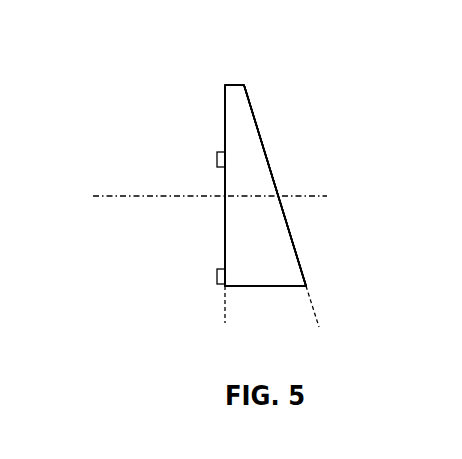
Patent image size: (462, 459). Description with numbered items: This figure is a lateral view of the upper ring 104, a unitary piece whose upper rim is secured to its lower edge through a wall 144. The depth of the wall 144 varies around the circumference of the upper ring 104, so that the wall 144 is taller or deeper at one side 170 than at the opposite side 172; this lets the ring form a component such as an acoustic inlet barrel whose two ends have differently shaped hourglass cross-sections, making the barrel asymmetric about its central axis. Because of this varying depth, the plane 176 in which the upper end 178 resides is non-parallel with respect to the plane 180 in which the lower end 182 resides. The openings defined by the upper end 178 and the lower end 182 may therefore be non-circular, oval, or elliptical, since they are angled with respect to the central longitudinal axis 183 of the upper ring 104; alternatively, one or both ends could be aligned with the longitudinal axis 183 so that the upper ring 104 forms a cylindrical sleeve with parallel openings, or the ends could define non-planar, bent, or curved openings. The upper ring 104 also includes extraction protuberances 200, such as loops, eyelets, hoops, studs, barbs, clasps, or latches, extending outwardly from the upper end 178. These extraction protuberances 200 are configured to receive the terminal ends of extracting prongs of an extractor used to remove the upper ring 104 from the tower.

The upper ring 104 is at (184, 113).
The opposite side 172 is at (232, 84).
The one side 170 is at (266, 287).
The plane 176 is at (223, 305).
The plane 180 is at (313, 304).
The lower end 182 is at (296, 241).
The upper end 178 is at (227, 233).
The wall 144 is at (253, 205).
The central longitudinal axis 183 is at (110, 196).
The extraction protuberances 200 is at (216, 160).